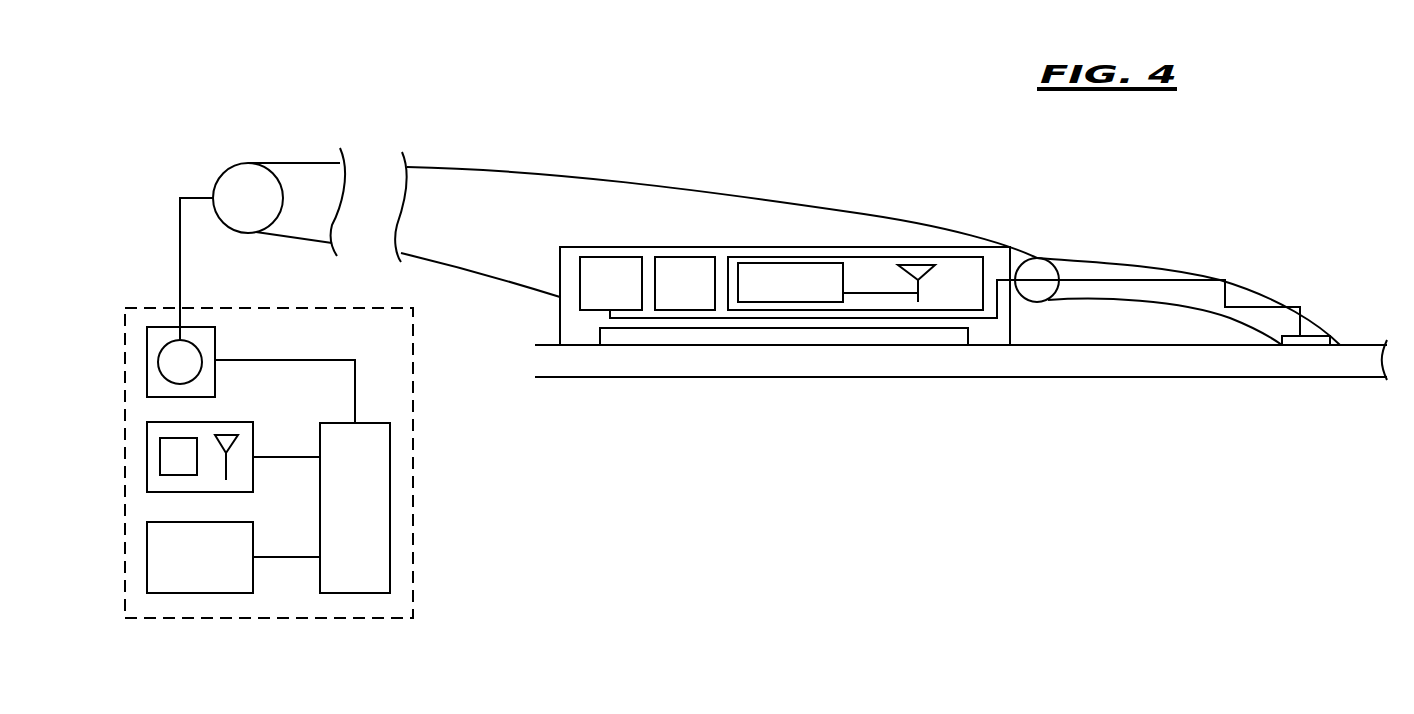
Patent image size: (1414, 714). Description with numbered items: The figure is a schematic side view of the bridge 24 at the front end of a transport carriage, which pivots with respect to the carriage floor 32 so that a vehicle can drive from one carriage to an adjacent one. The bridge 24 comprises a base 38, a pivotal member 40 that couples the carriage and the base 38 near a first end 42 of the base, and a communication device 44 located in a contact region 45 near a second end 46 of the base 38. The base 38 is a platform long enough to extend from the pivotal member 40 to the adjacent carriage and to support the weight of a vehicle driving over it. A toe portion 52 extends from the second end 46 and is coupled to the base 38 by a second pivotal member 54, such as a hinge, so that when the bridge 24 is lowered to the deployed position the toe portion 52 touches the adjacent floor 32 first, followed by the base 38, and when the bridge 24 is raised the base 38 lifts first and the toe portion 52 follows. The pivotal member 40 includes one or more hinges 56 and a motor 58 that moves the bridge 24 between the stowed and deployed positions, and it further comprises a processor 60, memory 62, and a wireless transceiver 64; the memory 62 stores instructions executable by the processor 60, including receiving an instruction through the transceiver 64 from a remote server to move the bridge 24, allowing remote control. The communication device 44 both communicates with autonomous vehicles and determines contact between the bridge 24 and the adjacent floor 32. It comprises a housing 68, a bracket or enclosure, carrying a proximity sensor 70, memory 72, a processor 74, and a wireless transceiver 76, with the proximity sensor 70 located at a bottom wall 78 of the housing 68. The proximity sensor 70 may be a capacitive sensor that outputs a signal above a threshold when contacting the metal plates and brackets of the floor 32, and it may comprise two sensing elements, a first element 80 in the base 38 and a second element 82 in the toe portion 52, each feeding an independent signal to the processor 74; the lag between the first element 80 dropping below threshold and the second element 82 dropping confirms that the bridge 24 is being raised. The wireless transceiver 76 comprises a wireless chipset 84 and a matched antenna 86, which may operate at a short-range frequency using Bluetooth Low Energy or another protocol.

The bridge 24 is at (686, 145).
The floor 32 is at (1353, 342).
The base 38 is at (555, 172).
The pivotal member 40 is at (228, 140).
The first end 42 is at (310, 163).
The communication device 44 is at (557, 325).
The contact region 45 is at (988, 347).
The second end 46 is at (1035, 258).
The toe portion 52 is at (1203, 262).
The second pivotal member 54 is at (1035, 302).
The hinge 56 is at (232, 187).
The motor 58 is at (215, 345).
The processor 60 is at (359, 517).
The memory 62 is at (204, 570).
The wireless transceiver 64 is at (253, 438).
The housing 68 is at (580, 247).
The proximity sensor 70 is at (667, 347).
The memory 72 is at (689, 297).
The processor 74 is at (616, 297).
The wireless transceiver 76 is at (948, 257).
The bottom wall 78 is at (580, 347).
The first sensing element 80 is at (876, 337).
The second sensing element 82 is at (1300, 347).
The wireless chipset 84 is at (795, 297).
The antenna 86 is at (920, 300).